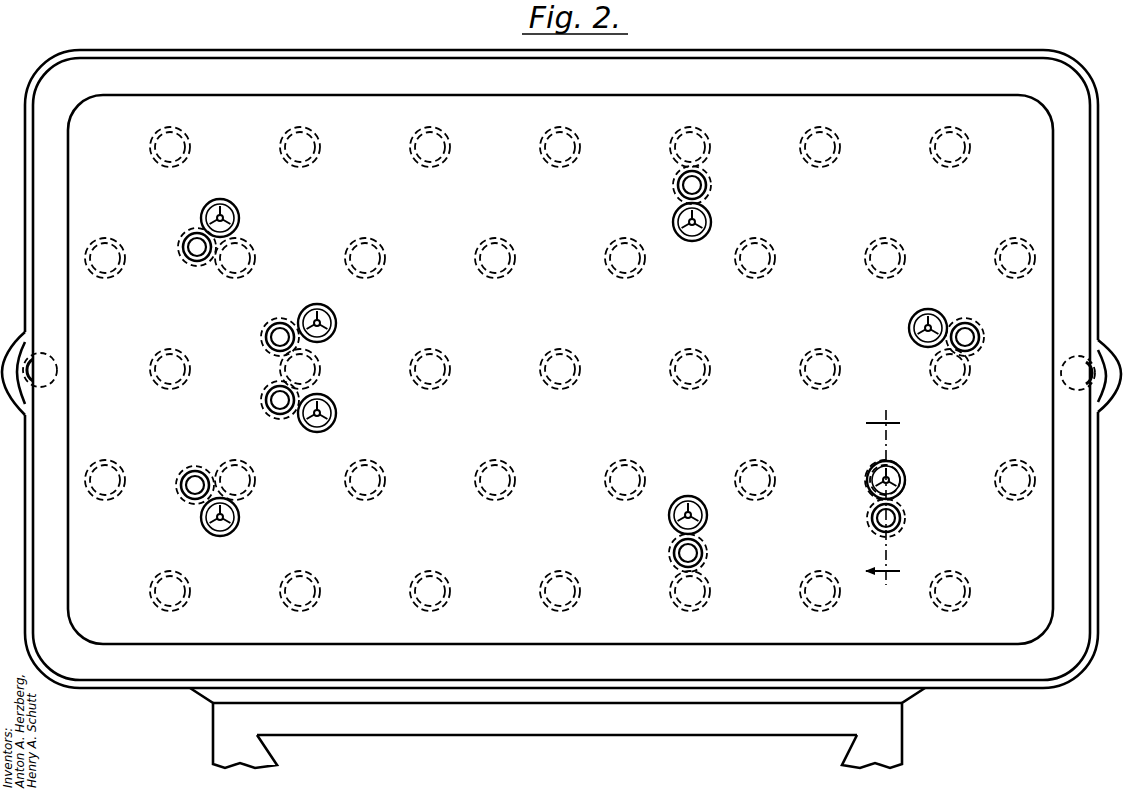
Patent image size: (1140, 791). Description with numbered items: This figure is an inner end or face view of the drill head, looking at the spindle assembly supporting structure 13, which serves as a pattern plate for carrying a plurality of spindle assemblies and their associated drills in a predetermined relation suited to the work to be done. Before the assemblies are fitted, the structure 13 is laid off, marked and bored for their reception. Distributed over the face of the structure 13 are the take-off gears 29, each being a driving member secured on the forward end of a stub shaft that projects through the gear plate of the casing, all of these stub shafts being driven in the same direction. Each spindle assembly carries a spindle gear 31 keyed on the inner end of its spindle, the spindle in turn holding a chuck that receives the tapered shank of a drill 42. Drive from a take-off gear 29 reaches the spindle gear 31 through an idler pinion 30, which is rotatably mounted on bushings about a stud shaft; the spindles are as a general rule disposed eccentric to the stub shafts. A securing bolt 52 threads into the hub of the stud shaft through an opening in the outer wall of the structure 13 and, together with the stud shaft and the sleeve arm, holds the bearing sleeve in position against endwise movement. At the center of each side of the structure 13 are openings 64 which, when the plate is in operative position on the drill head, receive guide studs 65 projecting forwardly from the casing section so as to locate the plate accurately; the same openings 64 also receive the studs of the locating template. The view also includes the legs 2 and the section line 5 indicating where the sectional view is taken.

The supporting legs 2 is at (228, 741).
The section line 5- 5 is at (883, 495).
The spindle assembly supporting structure 13 is at (262, 74).
The take-off gear 29 is at (282, 142).
The idler pinion 30 is at (180, 238).
The spindle gear 31 is at (205, 203).
The drill 42 is at (232, 221).
The securing bolt 52 is at (194, 256).
The openings 64 is at (28, 352).
The guide studs 65 is at (42, 369).